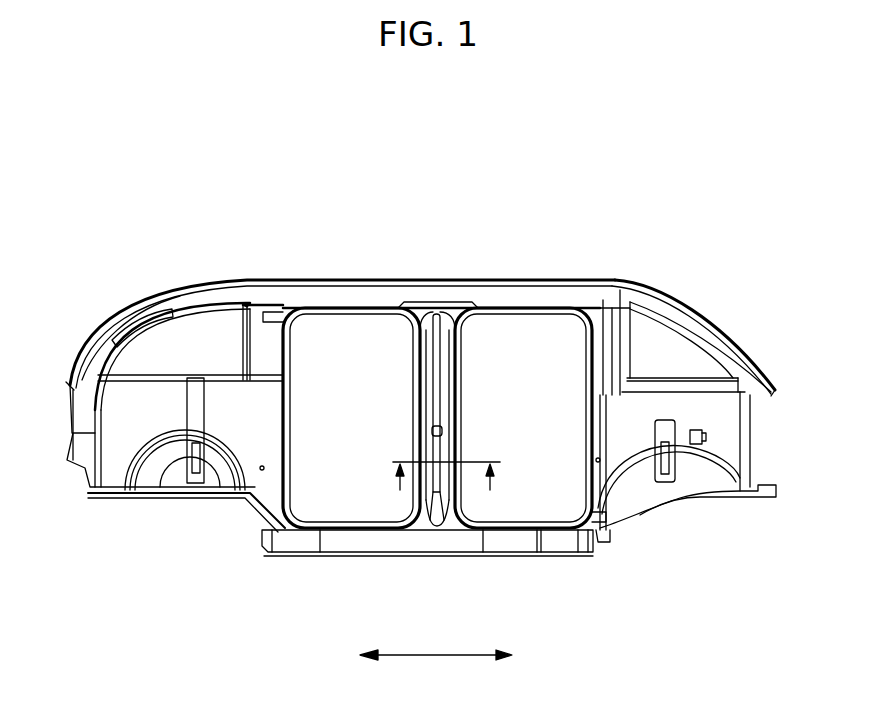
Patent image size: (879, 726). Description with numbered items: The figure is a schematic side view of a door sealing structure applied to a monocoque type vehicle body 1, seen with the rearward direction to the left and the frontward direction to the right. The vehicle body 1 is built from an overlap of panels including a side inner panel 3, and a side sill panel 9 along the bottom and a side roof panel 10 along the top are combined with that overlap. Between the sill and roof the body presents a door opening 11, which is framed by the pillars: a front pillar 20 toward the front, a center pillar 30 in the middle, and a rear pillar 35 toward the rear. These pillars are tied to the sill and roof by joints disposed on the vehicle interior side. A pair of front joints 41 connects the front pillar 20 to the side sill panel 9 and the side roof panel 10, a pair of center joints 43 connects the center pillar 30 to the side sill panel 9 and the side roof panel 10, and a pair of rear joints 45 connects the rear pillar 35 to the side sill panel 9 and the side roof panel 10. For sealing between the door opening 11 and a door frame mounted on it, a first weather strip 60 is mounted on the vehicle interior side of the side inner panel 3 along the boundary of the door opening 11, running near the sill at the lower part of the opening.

The monocoque type vehicle body 1 is at (530, 208).
The side inner panel 3 is at (300, 345).
The side sill panel 9 is at (447, 543).
The side roof panel 10 is at (258, 290).
The door opening 11 is at (552, 470).
The front pillar 20 is at (626, 357).
The center pillar 30 is at (470, 302).
The rear pillar 35 is at (263, 479).
The front joints 41 is at (604, 330).
The center joints 43 is at (437, 316).
The rear joints 45 is at (275, 322).
The first weather strip 60 is at (521, 538).